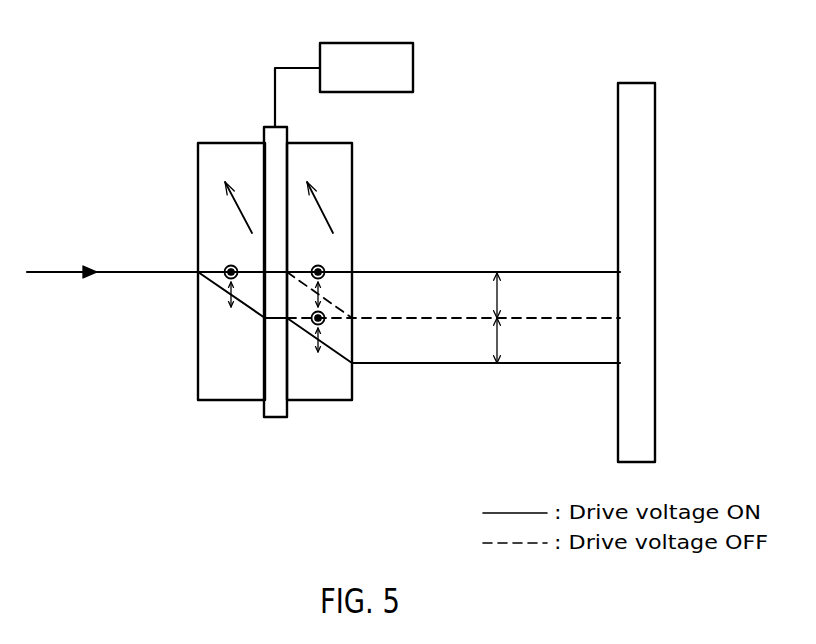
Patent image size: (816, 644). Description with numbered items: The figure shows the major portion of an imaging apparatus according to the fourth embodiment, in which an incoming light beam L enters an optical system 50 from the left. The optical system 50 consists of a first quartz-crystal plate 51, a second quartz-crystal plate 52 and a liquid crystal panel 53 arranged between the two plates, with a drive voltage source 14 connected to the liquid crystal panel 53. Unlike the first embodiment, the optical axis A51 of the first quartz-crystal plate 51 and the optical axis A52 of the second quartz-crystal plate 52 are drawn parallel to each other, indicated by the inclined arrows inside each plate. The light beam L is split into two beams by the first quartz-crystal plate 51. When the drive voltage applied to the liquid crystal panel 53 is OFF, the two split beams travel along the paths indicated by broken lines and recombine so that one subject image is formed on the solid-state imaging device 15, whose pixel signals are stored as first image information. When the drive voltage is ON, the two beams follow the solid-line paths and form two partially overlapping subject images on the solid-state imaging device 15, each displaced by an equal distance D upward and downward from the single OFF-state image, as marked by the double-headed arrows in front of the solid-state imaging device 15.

The drive voltage source 14 is at (372, 52).
The solid-state imaging device 15 is at (648, 162).
The optical system 50 is at (343, 480).
The first quartz-crystal plate 51 is at (227, 392).
The second quartz-crystal plate 52 is at (326, 392).
The liquid crystal panel 53 is at (276, 408).
The optical axis of the first quartz-crystal plate A51 is at (242, 213).
The optical axis of the second quartz-crystal plate A52 is at (320, 215).
The displacement distance D is at (498, 296).
The light beam L is at (57, 273).